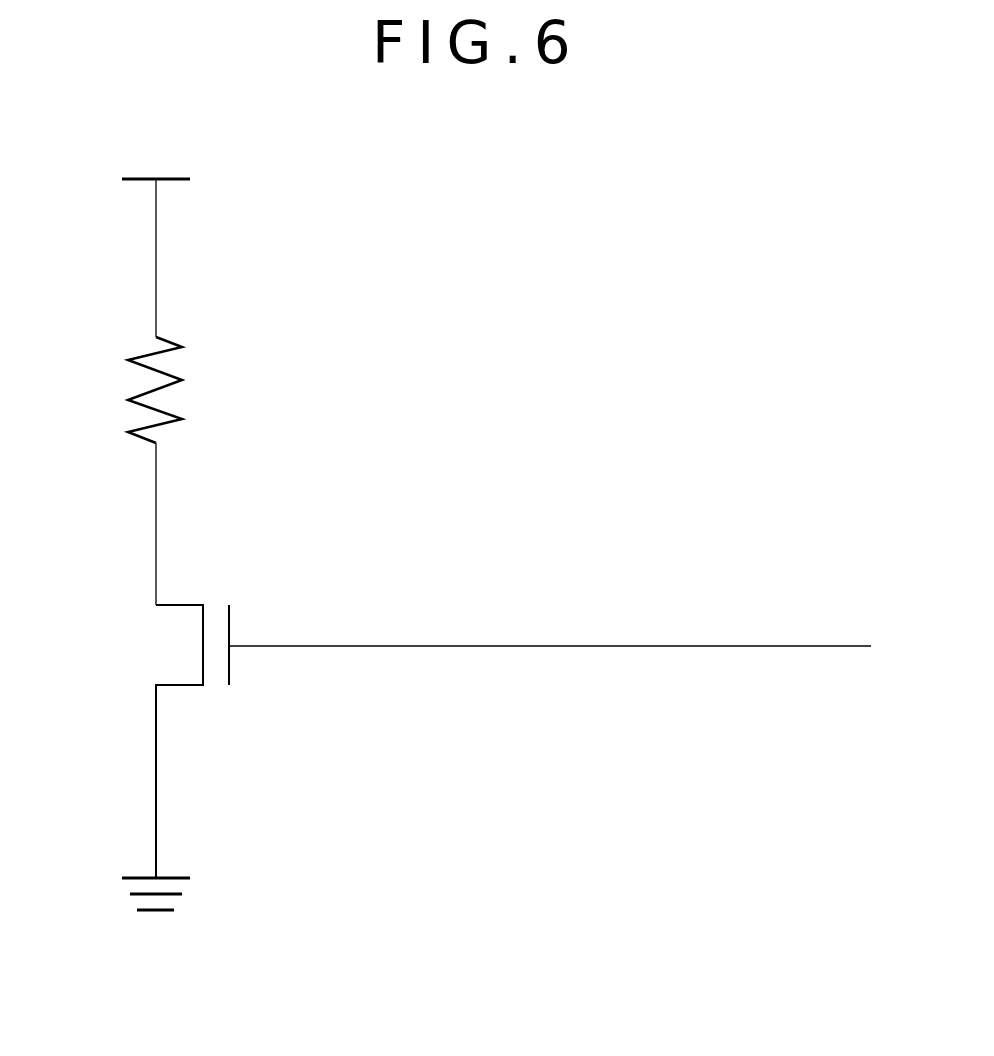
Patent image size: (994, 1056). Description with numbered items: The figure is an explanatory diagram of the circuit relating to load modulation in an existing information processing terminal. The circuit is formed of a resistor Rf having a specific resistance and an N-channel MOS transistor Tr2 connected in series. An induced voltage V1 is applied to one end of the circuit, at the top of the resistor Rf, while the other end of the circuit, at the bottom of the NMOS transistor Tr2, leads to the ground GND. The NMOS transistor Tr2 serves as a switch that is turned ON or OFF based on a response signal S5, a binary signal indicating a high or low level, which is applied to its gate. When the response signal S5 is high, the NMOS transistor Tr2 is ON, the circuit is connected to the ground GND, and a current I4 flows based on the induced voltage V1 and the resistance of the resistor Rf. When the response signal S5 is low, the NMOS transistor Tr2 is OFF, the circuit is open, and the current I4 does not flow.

The induced voltage V1 is at (156, 242).
The resistor Rf is at (114, 390).
The current I4 is at (136, 524).
The NMOS transistor Tr2 is at (137, 741).
The response signal S5 is at (571, 651).
The ground GND is at (156, 913).